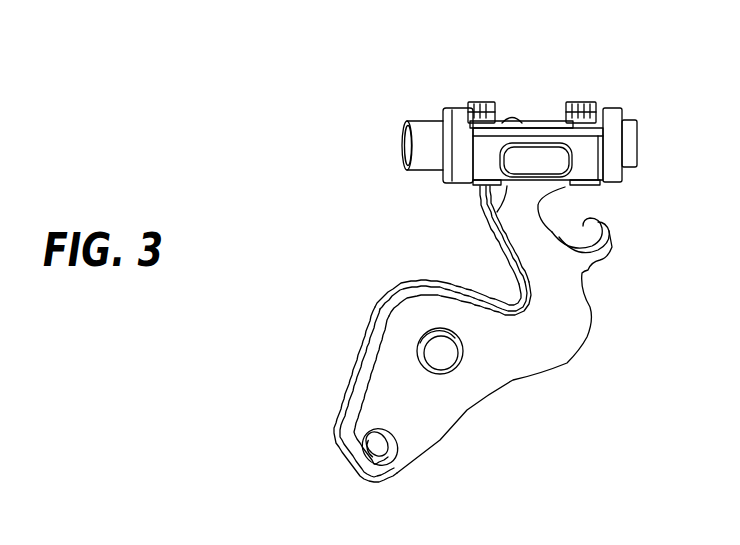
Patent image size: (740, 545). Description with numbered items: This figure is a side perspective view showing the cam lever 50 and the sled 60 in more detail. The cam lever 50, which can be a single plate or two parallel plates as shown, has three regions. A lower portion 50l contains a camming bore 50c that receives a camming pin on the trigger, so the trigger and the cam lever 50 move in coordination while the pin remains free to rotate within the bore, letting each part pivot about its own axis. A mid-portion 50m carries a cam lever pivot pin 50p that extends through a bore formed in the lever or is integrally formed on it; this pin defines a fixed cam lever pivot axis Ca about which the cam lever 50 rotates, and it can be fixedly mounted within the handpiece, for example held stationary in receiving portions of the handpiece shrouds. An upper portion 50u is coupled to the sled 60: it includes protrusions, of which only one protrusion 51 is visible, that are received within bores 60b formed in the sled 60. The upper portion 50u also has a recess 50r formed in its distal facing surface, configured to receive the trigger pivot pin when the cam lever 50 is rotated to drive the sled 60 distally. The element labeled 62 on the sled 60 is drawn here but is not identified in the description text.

The sled 60 is at (610, 100).
The bores 60b is at (534, 140).
The actuator tube 62 is at (425, 133).
The protrusion 51 is at (537, 162).
The cam lever 50 is at (555, 350).
The lower portion 50l is at (294, 441).
The mid-portion 50m is at (374, 282).
The recess 50r is at (495, 277).
The upper portion 50u is at (469, 197).
The cam lever pivot pin 50p is at (417, 350).
The cam lever pivot axis Ca is at (441, 355).
The camming bore 50c is at (390, 458).